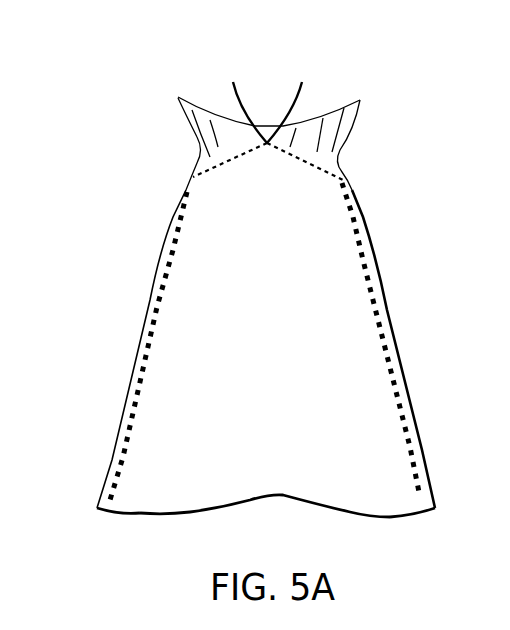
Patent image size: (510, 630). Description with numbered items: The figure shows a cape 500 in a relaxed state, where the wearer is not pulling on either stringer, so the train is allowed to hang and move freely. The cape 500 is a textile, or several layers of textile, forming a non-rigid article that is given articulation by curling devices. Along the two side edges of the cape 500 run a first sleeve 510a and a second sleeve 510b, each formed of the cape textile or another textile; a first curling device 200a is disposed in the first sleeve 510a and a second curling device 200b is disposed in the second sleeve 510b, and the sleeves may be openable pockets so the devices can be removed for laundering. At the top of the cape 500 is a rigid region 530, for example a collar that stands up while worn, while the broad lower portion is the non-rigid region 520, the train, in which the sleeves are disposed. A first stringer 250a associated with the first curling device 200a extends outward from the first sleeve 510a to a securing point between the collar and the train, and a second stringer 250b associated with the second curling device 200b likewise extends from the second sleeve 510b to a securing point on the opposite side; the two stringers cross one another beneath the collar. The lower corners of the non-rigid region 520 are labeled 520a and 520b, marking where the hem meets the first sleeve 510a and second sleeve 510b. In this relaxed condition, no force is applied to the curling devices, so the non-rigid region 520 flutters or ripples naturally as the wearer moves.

The cape 500 is at (327, 60).
The rigid region 530 is at (180, 113).
The first stringer 250a is at (197, 173).
The second stringer 250b is at (347, 177).
The first curling device 200a is at (162, 252).
The second curling device 200b is at (373, 265).
The first sleeve 510a is at (123, 352).
The second sleeve 510b is at (410, 350).
The non-rigid region 520 is at (275, 470).
The first hem corner 520a is at (128, 500).
The second hem corner 520b is at (408, 497).